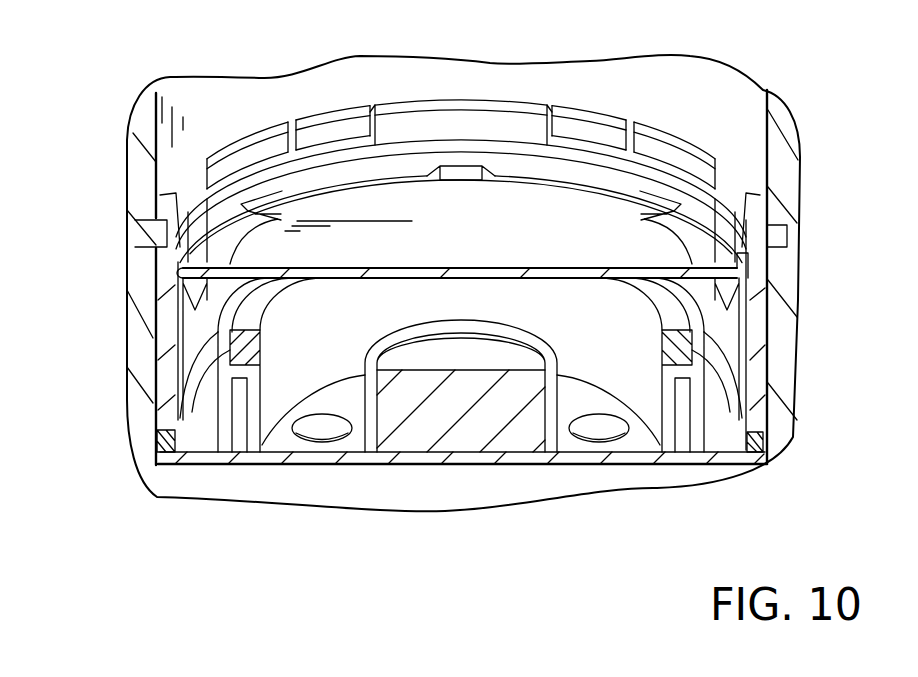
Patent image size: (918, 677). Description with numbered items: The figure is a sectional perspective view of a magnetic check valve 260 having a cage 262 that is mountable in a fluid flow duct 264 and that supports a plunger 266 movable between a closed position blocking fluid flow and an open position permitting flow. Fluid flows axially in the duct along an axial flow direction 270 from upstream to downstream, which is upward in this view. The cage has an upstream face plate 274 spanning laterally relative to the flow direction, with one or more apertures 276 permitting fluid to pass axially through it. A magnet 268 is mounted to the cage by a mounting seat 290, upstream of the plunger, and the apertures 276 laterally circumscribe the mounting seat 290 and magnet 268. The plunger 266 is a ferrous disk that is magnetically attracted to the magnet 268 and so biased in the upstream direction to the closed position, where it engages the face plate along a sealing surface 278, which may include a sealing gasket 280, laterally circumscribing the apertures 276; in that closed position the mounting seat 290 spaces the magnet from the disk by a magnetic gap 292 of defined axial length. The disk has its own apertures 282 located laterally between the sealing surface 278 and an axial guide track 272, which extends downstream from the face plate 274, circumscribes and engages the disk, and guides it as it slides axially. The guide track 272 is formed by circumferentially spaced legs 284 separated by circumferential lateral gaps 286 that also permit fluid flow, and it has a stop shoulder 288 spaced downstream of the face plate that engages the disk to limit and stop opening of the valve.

The magnetic check valve 260 is at (97, 297).
The cage 262 is at (167, 345).
The fluid flow duct 264 is at (162, 483).
The plunger 266 is at (460, 273).
The magnet 268 is at (453, 432).
The axial flow direction 270 is at (317, 487).
The axial guide track 272 is at (740, 336).
The upstream face plate 274 is at (260, 457).
The apertures 276 is at (317, 438).
The sealing surface 278 is at (270, 273).
The sealing gasket 280 is at (262, 326).
The apertures 282 is at (693, 232).
The legs 284 is at (643, 157).
The circumferential lateral gaps 286 is at (330, 117).
The stop shoulder 288 is at (442, 125).
The mounting seat 290 is at (558, 373).
The magnetic gap 292 is at (420, 320).